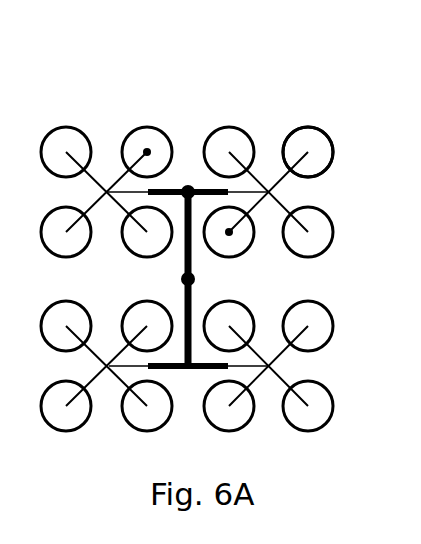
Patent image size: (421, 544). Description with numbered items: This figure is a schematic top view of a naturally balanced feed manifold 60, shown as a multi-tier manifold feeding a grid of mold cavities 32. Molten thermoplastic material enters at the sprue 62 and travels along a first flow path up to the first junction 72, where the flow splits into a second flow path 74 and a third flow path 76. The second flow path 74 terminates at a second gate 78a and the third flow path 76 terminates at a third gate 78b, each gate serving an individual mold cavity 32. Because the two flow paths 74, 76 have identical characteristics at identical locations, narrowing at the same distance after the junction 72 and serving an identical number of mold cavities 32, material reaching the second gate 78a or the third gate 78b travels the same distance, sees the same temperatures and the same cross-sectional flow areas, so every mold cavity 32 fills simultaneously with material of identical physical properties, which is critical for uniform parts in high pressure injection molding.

The mold cavity 32 is at (315, 127).
The naturally balanced feed manifold 60 is at (233, 84).
The sprue 62 is at (178, 279).
The first junction 72 is at (188, 186).
The second flow path 74 is at (259, 189).
The third flow path 76 is at (114, 189).
The second gate 78a is at (227, 236).
The third gate 78b is at (146, 148).